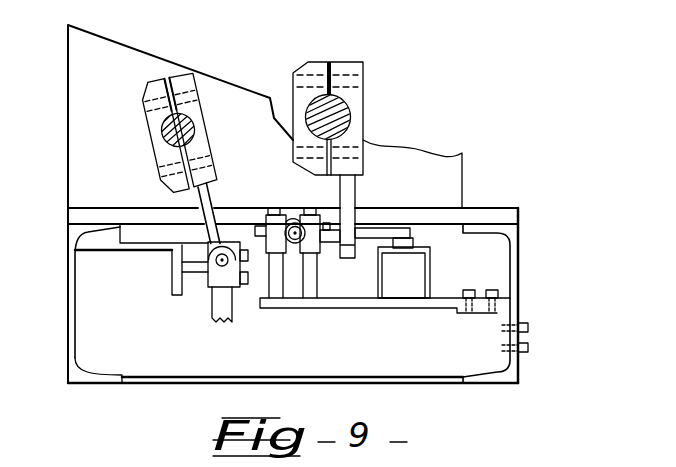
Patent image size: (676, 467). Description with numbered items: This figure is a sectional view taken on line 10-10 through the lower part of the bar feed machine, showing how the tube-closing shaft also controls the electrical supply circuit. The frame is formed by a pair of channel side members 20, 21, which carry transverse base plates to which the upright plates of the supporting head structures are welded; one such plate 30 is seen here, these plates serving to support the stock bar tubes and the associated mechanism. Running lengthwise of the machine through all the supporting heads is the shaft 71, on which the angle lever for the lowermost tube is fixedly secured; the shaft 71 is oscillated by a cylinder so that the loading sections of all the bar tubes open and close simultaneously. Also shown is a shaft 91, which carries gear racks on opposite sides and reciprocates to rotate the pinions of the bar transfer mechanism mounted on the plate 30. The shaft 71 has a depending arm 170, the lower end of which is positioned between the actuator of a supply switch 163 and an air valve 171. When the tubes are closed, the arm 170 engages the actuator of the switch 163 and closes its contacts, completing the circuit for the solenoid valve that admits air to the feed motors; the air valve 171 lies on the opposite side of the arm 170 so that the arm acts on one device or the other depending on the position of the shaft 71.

The section line 10- 10 is at (208, 332).
The channel side member 20 is at (520, 276).
The channel side member 21 is at (68, 305).
The plate 30 is at (165, 197).
The shaft 71 is at (348, 112).
The shaft 91 is at (189, 163).
The supply switch 163 is at (404, 272).
The depending arm 170 is at (401, 199).
The air valve 171 is at (261, 215).